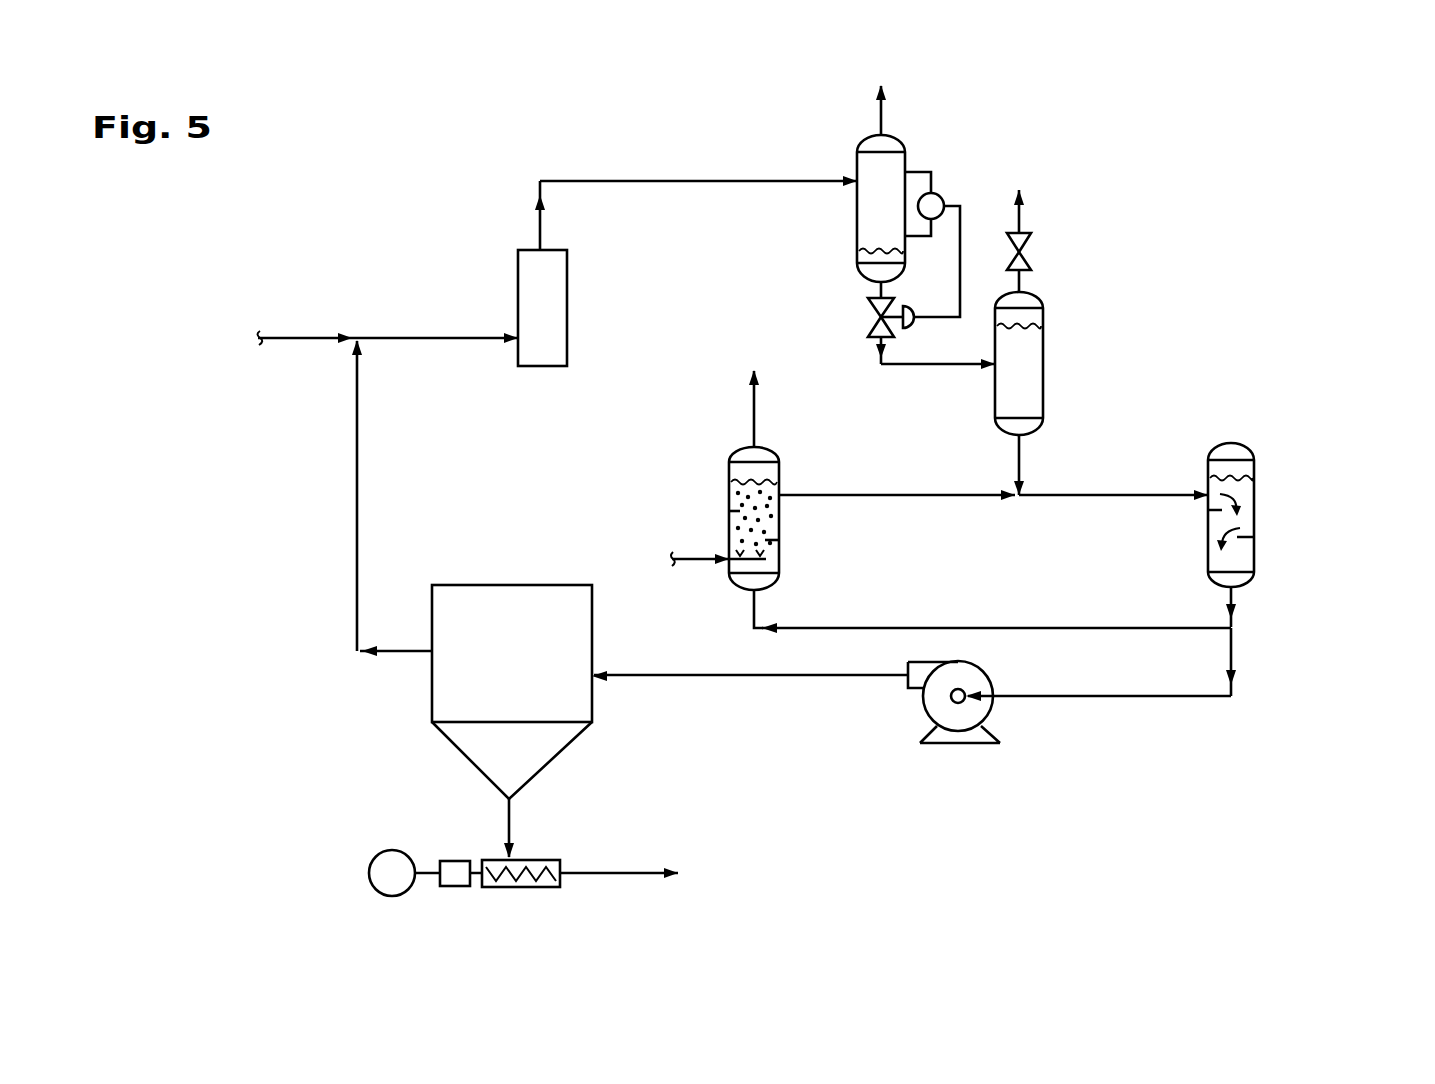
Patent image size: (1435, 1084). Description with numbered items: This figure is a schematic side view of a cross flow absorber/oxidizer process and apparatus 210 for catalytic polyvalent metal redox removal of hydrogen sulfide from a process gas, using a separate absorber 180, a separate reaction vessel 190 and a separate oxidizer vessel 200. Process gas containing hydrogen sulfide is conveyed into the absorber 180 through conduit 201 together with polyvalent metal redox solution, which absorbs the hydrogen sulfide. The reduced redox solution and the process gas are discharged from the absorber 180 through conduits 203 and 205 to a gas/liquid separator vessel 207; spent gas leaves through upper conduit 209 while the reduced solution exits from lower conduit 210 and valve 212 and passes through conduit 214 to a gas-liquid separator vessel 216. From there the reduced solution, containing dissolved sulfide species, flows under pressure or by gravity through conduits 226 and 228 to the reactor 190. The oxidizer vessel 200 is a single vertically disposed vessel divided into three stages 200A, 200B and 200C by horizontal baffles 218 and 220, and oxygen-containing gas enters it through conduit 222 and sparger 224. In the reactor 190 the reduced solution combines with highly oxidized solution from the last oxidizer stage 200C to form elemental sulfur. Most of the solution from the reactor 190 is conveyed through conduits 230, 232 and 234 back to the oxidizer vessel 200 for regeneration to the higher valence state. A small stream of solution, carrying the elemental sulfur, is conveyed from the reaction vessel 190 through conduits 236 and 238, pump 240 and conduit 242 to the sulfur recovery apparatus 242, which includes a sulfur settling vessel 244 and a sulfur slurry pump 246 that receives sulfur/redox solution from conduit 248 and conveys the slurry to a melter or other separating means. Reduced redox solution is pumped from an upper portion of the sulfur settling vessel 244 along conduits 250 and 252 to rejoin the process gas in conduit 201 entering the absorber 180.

The absorber 180 is at (558, 292).
The reaction vessel 190 is at (1255, 514).
The oxidizer vessel 200 is at (780, 470).
The oxidizer stage 200A is at (780, 548).
The oxidizer stage 200B is at (727, 520).
The last oxidizer stage 200C is at (775, 492).
The conduit 201 is at (418, 338).
The conduit 203 is at (538, 225).
The conduit 205 is at (598, 181).
The gas/liquid separator vessel 207 is at (857, 160).
The upper conduit 209 is at (882, 121).
The lower conduit 210 is at (878, 352).
The valve 212 is at (872, 318).
The conduit 214 is at (940, 366).
The gas-liquid separator vessel 216 is at (1035, 353).
The horizontal baffle 218 is at (765, 538).
The horizontal baffle 220 is at (727, 505).
The conduit 222 is at (688, 559).
The sparger 224 is at (750, 560).
The conduit 226 is at (1016, 455).
The conduit 228 is at (1143, 452).
The conduit 230 is at (1235, 597).
The conduit 232 is at (1050, 628).
The conduit 234 is at (757, 610).
The conduit 236 is at (1237, 652).
The conduit 238 is at (1082, 696).
The pump 240 is at (972, 678).
The conduit 242 is at (513, 575).
The sulfur settling vessel 244 is at (432, 613).
The sulfur slurry pump 246 is at (550, 860).
The conduit 248 is at (512, 822).
The conduit 250 is at (400, 651).
The conduit 252 is at (357, 498).